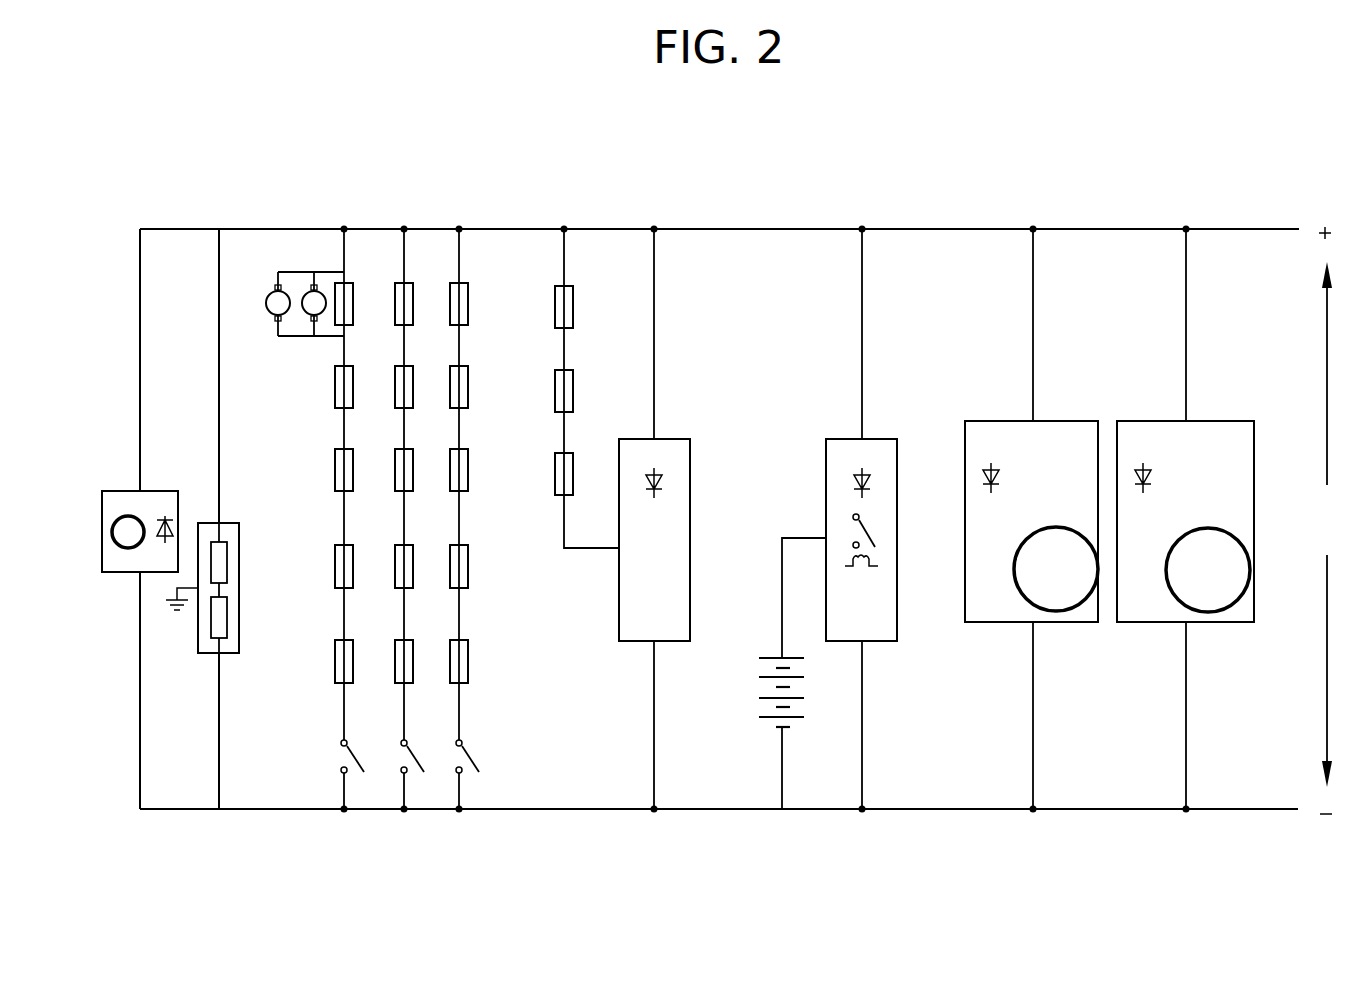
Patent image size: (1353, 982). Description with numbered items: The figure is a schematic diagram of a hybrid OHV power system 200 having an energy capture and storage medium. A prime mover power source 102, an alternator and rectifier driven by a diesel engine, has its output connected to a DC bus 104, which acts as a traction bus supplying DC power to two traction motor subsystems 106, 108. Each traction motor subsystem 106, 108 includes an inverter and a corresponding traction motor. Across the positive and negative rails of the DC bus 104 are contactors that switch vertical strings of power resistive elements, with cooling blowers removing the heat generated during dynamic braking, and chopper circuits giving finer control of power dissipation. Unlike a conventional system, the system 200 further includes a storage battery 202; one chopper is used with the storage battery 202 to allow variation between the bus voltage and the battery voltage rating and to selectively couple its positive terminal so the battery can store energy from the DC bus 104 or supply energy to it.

The hybrid OHV power system 200 is at (225, 168).
The prime mover power source 102 is at (123, 573).
The DC bus 104 is at (1332, 520).
The traction motor subsystem 106 is at (1003, 623).
The traction motor subsystem 108 is at (1168, 623).
The storage battery 202 is at (759, 718).